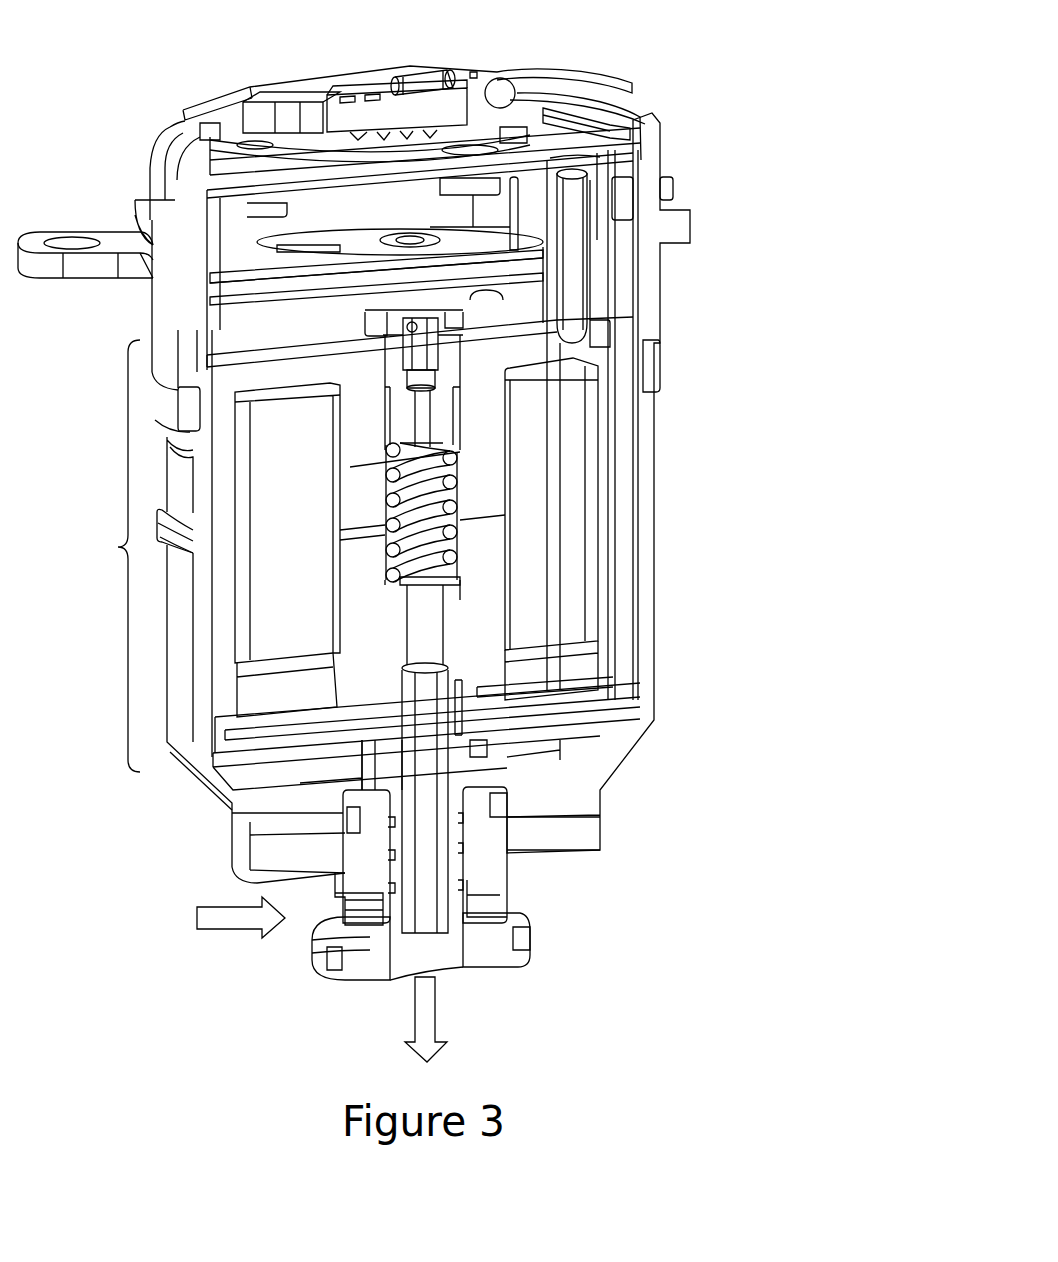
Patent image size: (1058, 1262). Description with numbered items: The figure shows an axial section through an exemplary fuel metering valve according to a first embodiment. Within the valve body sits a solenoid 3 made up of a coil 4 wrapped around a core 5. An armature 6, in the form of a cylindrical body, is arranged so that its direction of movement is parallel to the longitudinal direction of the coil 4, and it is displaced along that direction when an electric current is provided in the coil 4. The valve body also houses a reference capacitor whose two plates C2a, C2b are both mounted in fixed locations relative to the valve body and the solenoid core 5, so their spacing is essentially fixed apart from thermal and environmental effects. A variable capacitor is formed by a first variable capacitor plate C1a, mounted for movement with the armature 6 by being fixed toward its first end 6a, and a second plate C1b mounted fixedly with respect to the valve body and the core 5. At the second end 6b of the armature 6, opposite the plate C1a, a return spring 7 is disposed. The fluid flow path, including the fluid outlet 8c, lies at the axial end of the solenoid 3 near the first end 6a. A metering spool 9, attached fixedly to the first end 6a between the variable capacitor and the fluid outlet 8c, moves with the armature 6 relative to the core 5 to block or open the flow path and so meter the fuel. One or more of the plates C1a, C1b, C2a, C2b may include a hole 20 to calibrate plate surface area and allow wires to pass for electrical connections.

The solenoid 3 is at (90, 556).
The coil 4 is at (570, 487).
The core 5 is at (480, 493).
The armature 6 is at (483, 568).
The first end of the armature 6a is at (473, 687).
The second end of the armature 6b is at (480, 537).
The return spring 7 is at (423, 485).
The fluid outlet 8c is at (330, 968).
The metering spool 9 is at (485, 847).
The hole 20 is at (313, 268).
The first variable capacitor plate C1a is at (510, 703).
The second variable capacitor plate C1b is at (620, 728).
The reference capacitor plate C2a is at (487, 257).
The reference capacitor plate C2b is at (690, 158).